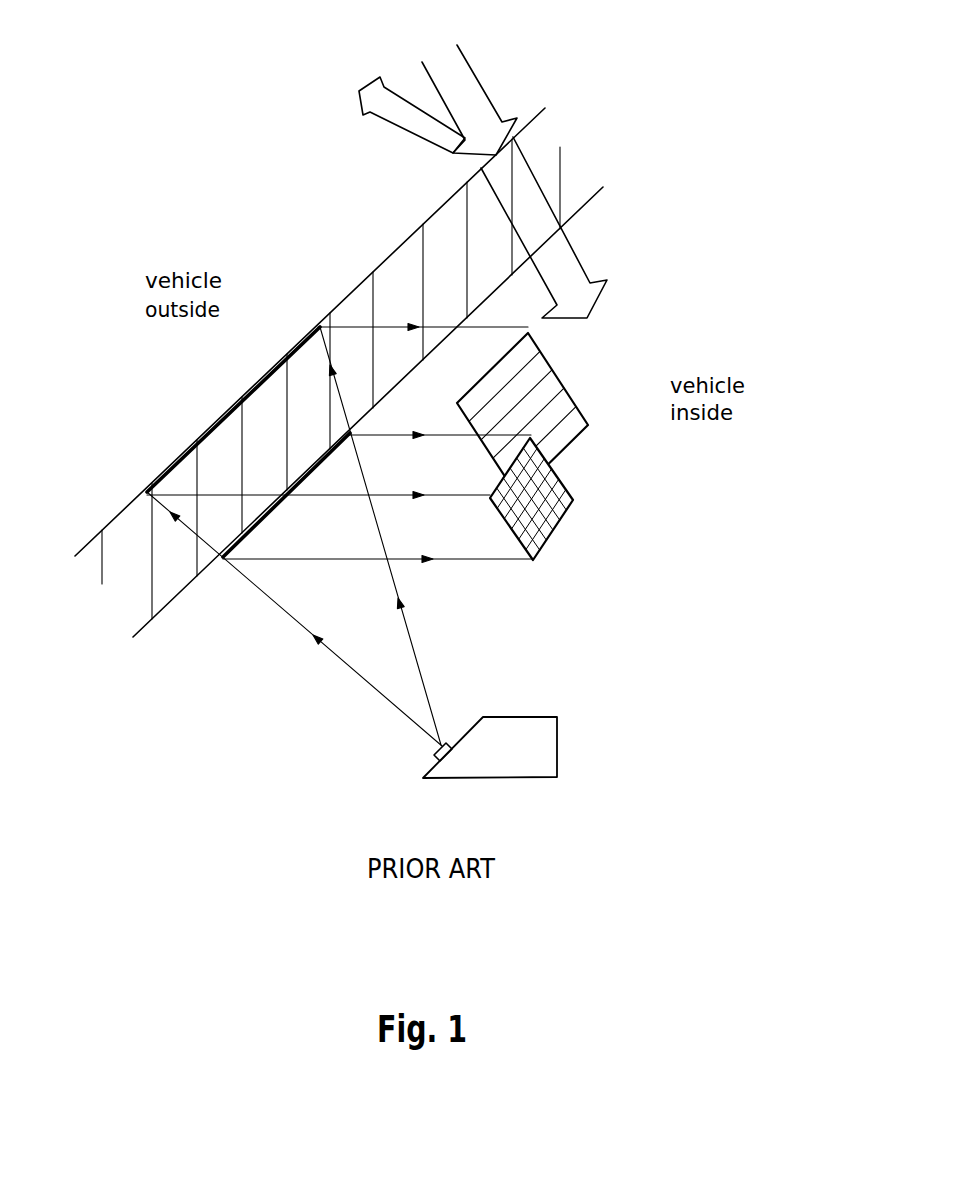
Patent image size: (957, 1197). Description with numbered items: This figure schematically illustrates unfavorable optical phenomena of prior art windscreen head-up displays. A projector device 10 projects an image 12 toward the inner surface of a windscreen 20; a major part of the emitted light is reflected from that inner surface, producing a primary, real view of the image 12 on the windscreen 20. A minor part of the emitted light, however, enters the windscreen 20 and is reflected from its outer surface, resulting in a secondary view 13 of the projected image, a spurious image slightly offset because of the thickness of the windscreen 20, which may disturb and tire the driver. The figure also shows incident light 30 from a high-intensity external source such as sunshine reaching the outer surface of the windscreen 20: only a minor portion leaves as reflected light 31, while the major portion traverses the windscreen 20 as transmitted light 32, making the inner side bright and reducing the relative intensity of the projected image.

The projector device 10 is at (525, 722).
The image 12 is at (548, 537).
The secondary view 13 is at (567, 448).
The windscreen 20 is at (103, 530).
The incident light 30 is at (465, 91).
The reflected light 31 is at (400, 118).
The transmitted light 32 is at (563, 261).